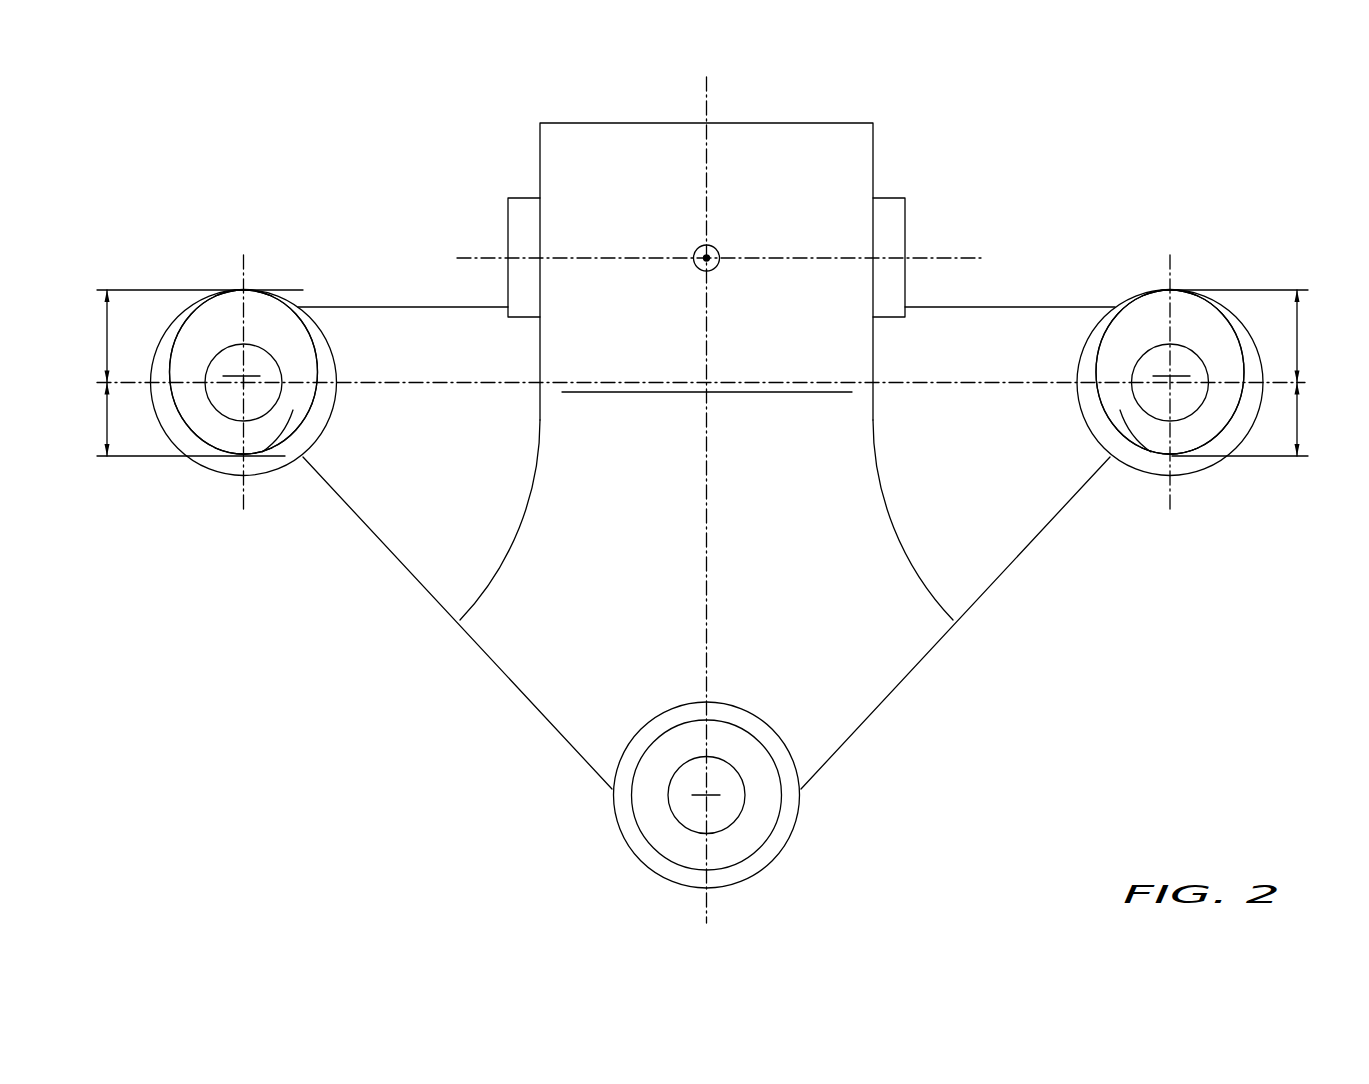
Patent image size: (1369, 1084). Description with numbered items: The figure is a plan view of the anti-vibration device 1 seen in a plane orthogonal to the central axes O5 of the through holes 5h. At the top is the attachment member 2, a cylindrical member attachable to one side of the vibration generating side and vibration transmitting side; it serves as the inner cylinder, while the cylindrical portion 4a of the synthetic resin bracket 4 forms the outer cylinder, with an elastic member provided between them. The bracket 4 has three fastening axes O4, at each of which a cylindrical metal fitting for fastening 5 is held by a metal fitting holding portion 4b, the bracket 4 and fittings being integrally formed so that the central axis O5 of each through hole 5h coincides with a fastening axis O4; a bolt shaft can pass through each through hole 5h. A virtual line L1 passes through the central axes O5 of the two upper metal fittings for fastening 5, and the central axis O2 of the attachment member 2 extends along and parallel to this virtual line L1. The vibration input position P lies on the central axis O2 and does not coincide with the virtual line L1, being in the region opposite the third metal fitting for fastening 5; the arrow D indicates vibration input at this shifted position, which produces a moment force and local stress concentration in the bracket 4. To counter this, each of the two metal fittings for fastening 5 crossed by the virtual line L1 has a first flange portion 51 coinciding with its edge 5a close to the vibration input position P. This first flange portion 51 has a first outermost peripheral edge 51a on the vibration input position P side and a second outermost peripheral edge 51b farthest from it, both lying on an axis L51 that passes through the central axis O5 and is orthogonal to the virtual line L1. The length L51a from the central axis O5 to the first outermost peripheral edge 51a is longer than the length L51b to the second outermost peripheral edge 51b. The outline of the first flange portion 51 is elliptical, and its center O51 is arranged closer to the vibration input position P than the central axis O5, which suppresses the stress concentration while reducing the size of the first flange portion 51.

The anti-vibration device 1 is at (1046, 667).
The attachment member 2 is at (895, 207).
The bracket 4 is at (607, 603).
The cylindrical portion 4a is at (749, 151).
The metal fitting holding portion 4b is at (226, 476).
The metal fitting for fastening 5 is at (180, 326).
The edge 5a is at (290, 423).
The through hole 5h is at (260, 393).
The first flange portion 51 is at (320, 357).
The first outermost peripheral edge 51a is at (238, 290).
The second outermost peripheral edge 51b is at (246, 460).
The arrow D is at (714, 249).
The vibration input position P is at (709, 262).
The virtual line L1 is at (683, 383).
The axis L51 is at (705, 369).
The length L51a is at (702, 336).
The length L51b is at (702, 420).
The central axis O2 is at (742, 259).
The center O51 is at (180, 505).
The fastening axis O4 is at (775, 893).
The central axis O5 is at (732, 647).